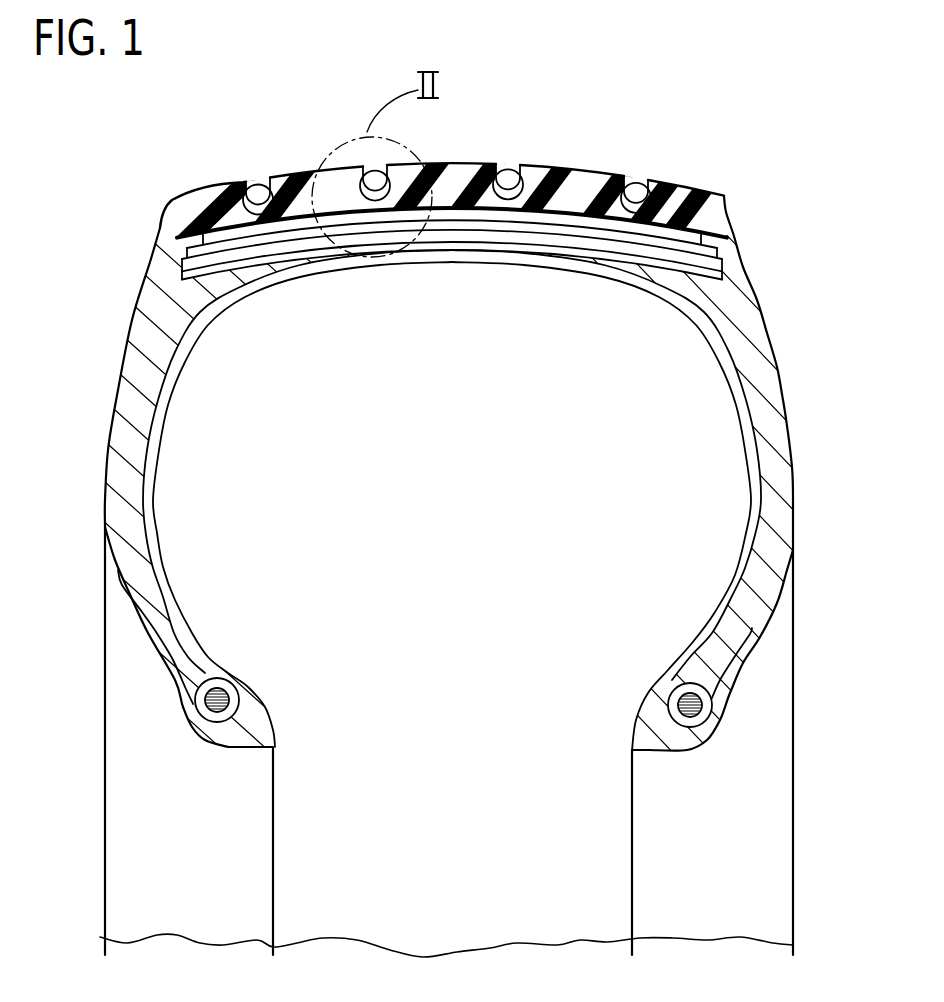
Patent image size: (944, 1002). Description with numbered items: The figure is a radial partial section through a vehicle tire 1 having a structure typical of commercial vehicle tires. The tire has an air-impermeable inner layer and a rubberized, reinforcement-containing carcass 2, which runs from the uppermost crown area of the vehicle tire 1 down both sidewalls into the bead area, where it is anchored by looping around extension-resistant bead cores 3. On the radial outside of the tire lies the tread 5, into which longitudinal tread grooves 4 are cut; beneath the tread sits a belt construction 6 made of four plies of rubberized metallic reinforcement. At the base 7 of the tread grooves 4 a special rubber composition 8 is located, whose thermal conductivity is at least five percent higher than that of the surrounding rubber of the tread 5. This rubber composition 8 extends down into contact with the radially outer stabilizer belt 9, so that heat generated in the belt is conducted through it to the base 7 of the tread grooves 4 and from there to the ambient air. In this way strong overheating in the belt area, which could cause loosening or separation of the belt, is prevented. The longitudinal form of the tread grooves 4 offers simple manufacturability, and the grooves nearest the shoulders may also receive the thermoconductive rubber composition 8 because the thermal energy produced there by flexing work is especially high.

The vehicle tire 1 is at (673, 137).
The carcass 2 is at (150, 554).
The bead cores 3 is at (225, 697).
The tread grooves 4 is at (248, 182).
The tread 5 is at (278, 180).
The belt construction 6 is at (180, 266).
The base of tread grooves 7 is at (512, 183).
The rubber composition 8 is at (495, 252).
The radially outer stabilizer belt 9 is at (733, 220).